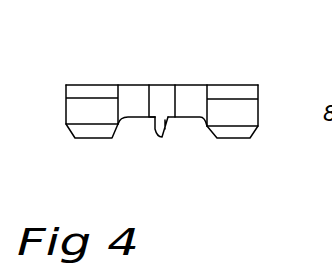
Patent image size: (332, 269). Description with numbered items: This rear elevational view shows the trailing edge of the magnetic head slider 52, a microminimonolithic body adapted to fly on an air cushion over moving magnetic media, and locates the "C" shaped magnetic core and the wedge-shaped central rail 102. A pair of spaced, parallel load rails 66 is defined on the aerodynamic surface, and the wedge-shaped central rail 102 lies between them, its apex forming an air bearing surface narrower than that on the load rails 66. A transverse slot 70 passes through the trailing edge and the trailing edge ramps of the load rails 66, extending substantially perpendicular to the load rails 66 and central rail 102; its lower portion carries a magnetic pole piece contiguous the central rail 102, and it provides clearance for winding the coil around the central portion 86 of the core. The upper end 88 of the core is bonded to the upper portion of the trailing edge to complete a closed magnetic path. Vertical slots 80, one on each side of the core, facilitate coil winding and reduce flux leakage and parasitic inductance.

The magnetic head slider 52 is at (237, 85).
The transverse slot 70 is at (260, 108).
The load rails 66 is at (93, 131).
The vertical slots 80 is at (128, 85).
The upper end 88 is at (162, 85).
The wedge-shaped central rail 102 is at (163, 137).
The central portion 86 is at (162, 102).